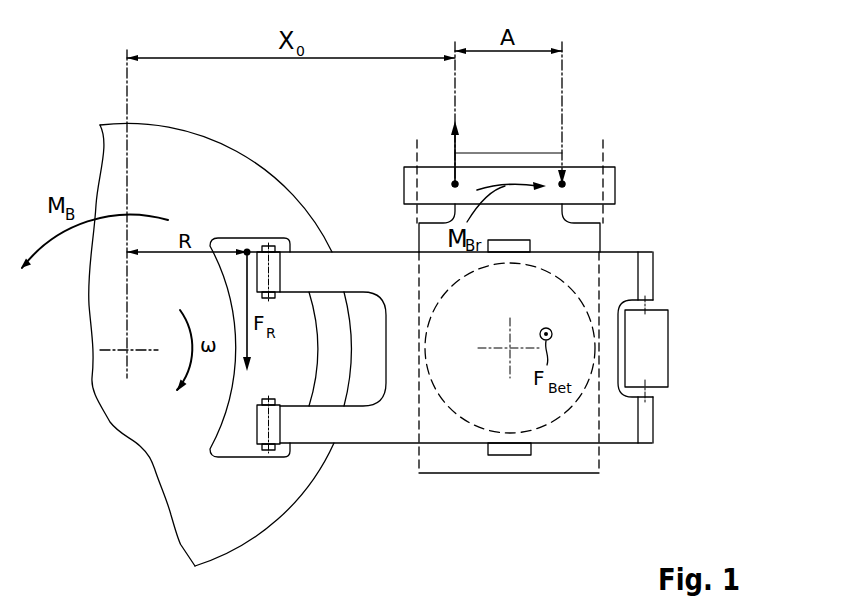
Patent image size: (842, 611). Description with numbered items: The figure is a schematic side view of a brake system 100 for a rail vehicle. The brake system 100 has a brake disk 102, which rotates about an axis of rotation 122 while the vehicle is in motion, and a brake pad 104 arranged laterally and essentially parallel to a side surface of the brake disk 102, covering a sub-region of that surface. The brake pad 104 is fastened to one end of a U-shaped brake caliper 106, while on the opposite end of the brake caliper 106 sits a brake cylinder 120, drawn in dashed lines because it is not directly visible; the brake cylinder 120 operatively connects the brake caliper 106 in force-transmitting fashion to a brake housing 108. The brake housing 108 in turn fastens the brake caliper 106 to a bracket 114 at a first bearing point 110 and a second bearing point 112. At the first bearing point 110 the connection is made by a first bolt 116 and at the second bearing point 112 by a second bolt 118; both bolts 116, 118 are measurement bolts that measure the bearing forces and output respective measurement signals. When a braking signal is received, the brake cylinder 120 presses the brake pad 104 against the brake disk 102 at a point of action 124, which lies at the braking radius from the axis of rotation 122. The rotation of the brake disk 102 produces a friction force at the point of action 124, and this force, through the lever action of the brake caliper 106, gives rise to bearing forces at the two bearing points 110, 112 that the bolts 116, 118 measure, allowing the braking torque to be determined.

The brake system 100 is at (668, 113).
The brake disk 102 is at (256, 505).
The brake pad 104 is at (281, 448).
The brake caliper 106 is at (618, 403).
The brake housing 108 is at (522, 460).
The first bearing point 110 is at (452, 181).
The second bearing point 112 is at (565, 181).
The bracket 114 is at (615, 190).
The first bolt 116 is at (457, 181).
The second bolt 118 is at (560, 181).
The brake cylinder 120 is at (566, 412).
The axis of rotation 122 is at (127, 350).
The point of action 124 is at (248, 245).